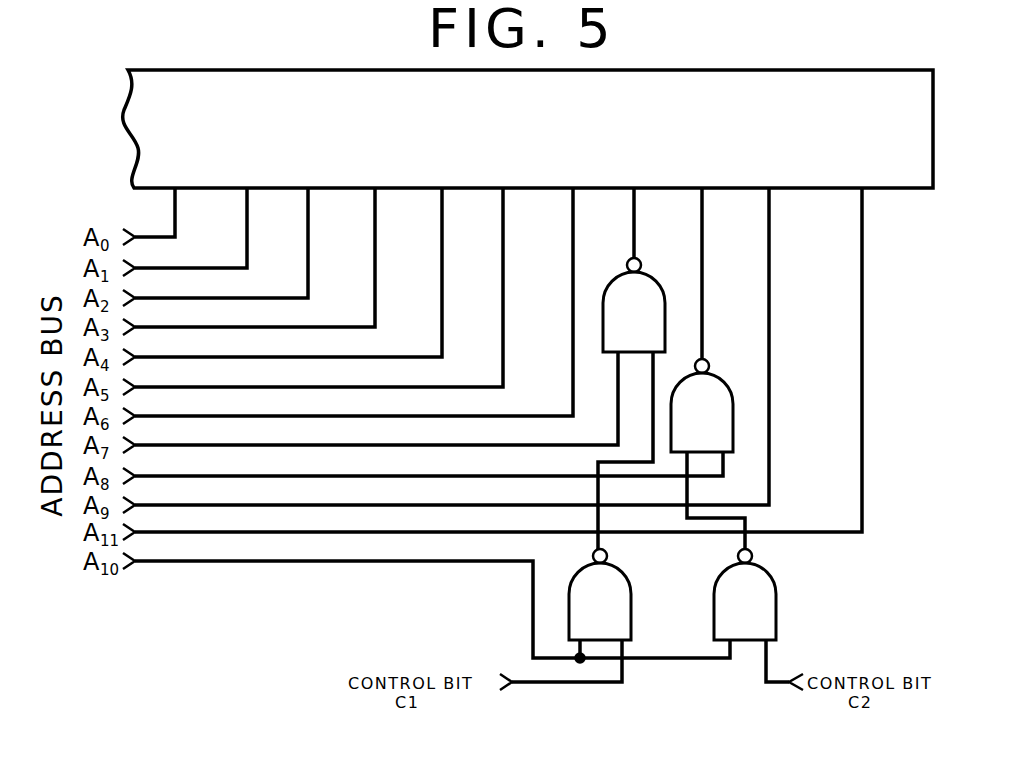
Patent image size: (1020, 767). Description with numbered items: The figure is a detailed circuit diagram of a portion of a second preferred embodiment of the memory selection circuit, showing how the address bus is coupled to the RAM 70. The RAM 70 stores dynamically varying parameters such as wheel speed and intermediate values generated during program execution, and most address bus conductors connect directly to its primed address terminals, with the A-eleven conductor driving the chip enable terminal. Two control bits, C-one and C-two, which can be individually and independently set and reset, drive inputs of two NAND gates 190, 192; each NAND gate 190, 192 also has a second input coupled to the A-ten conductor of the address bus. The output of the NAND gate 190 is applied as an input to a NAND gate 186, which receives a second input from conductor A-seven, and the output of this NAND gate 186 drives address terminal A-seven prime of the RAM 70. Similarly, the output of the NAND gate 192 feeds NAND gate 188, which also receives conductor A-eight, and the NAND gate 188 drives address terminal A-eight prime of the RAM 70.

The RAM 70 is at (735, 76).
The NAND gate 186 is at (634, 305).
The NAND gate 188 is at (702, 405).
The NAND gate 190 is at (600, 594).
The NAND gate 192 is at (745, 594).